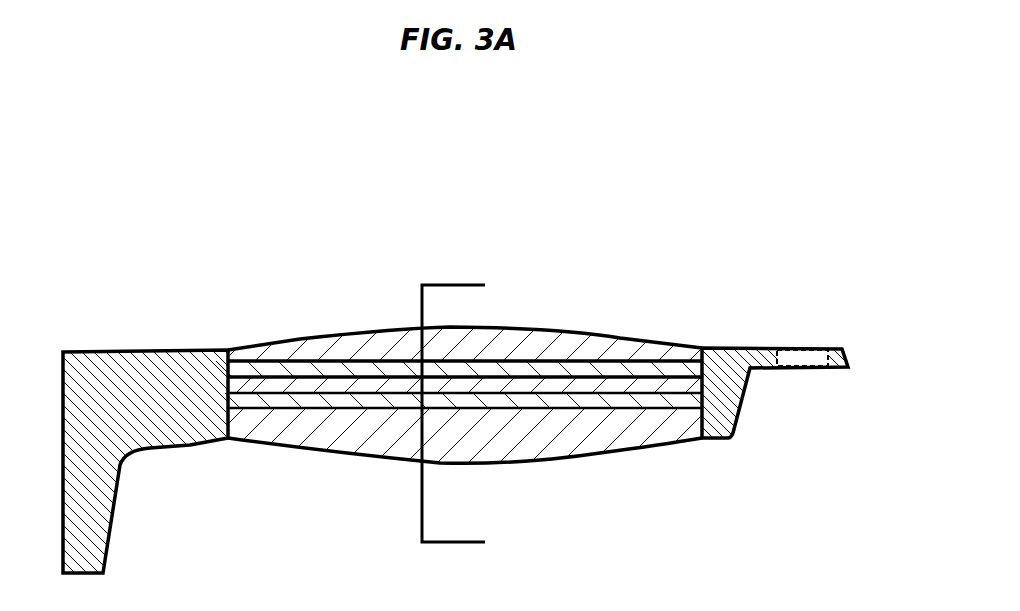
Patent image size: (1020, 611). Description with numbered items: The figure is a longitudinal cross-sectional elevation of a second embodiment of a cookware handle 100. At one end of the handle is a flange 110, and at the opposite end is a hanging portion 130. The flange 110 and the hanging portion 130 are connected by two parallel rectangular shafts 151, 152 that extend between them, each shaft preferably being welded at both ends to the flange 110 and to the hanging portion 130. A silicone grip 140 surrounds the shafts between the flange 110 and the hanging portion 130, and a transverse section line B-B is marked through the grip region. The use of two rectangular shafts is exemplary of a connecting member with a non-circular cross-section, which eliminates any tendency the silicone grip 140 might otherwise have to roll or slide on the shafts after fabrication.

The cookware handle 100 is at (597, 132).
The flange 110 is at (145, 351).
The hanging portion 130 is at (807, 322).
The silicone grip 140 is at (463, 396).
The rectangular shaft 151 is at (565, 366).
The rectangular shaft 152 is at (465, 410).